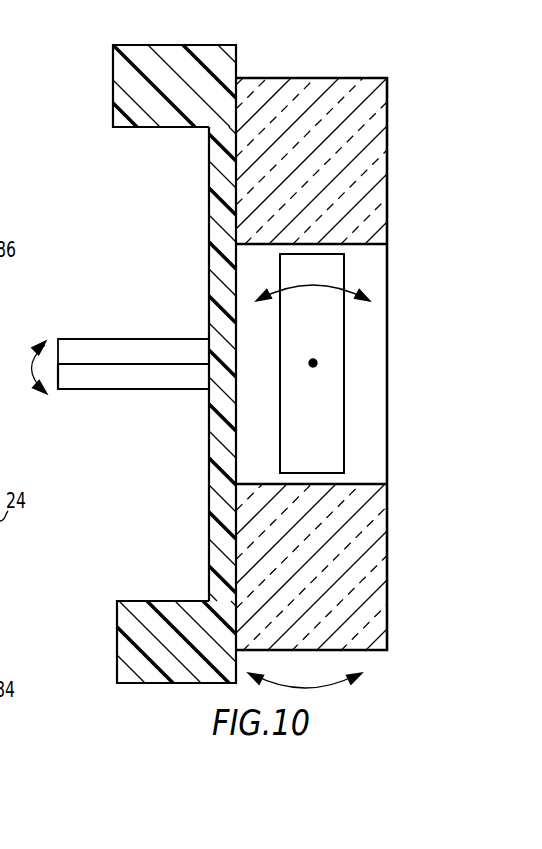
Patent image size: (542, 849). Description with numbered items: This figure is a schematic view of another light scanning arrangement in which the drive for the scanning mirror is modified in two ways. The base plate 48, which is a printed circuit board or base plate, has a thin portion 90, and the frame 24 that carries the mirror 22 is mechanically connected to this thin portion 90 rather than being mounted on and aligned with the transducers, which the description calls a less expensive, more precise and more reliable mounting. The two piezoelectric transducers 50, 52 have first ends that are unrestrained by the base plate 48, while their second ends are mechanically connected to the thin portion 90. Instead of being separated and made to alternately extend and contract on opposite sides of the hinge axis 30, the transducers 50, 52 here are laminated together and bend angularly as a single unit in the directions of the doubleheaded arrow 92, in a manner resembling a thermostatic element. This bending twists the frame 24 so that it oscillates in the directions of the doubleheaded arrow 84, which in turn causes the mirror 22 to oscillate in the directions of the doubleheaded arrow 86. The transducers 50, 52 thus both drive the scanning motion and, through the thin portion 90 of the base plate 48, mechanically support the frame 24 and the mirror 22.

The base plate 48 is at (113, 75).
The thin portion 90 is at (208, 199).
The frame 24 is at (370, 492).
The mirror 22 is at (328, 328).
The hinge axis 30 is at (313, 363).
The doubleheaded arrow 86 is at (349, 294).
The doubleheaded arrow 84 is at (340, 689).
The piezoelectric transducer 52 is at (125, 353).
The piezoelectric transducer 50 is at (125, 377).
The doubleheaded arrow 92 is at (32, 372).